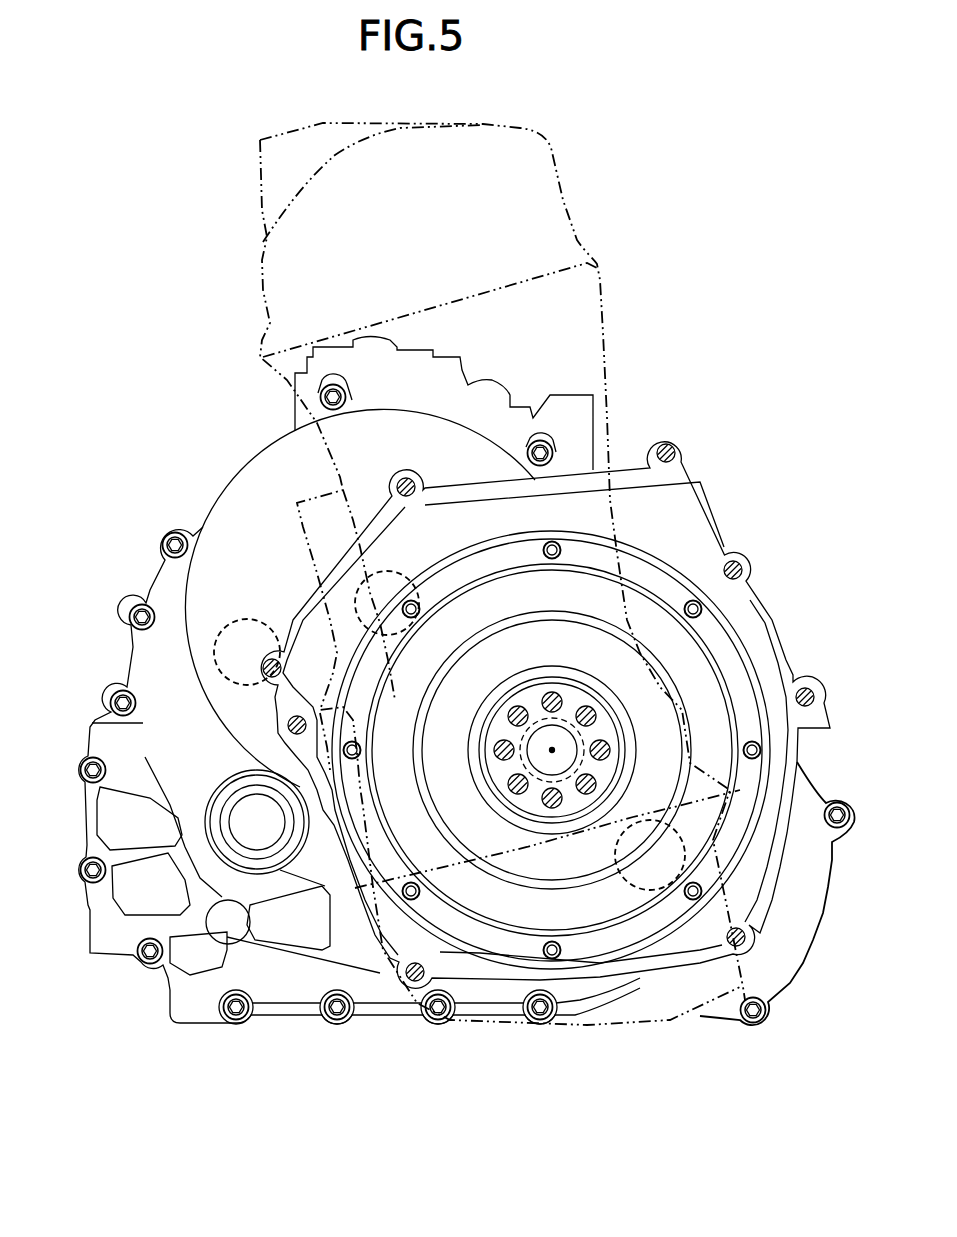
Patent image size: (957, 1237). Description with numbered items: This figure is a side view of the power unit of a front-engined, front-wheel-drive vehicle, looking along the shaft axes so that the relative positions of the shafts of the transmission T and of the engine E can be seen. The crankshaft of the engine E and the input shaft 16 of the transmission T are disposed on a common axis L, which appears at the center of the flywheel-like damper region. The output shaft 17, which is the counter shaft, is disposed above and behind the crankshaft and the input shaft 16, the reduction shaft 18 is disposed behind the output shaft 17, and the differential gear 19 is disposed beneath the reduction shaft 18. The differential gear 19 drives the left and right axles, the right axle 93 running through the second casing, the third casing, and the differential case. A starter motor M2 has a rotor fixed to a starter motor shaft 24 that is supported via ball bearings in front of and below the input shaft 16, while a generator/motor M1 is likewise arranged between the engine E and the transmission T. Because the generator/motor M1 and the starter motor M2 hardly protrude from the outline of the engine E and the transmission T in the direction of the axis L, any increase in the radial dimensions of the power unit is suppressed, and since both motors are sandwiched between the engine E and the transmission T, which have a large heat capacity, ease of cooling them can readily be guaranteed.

The engine E is at (607, 341).
The generator/motor M1 is at (213, 487).
The starter motor M2 is at (830, 782).
The transmission T is at (142, 583).
The axis L is at (552, 748).
The input shaft 16 is at (568, 722).
The output shaft 17 is at (388, 571).
The reduction shaft 18 is at (265, 619).
The differential gear 19 is at (203, 854).
The starter motor shaft 24 is at (625, 882).
The right axle 93 is at (265, 837).